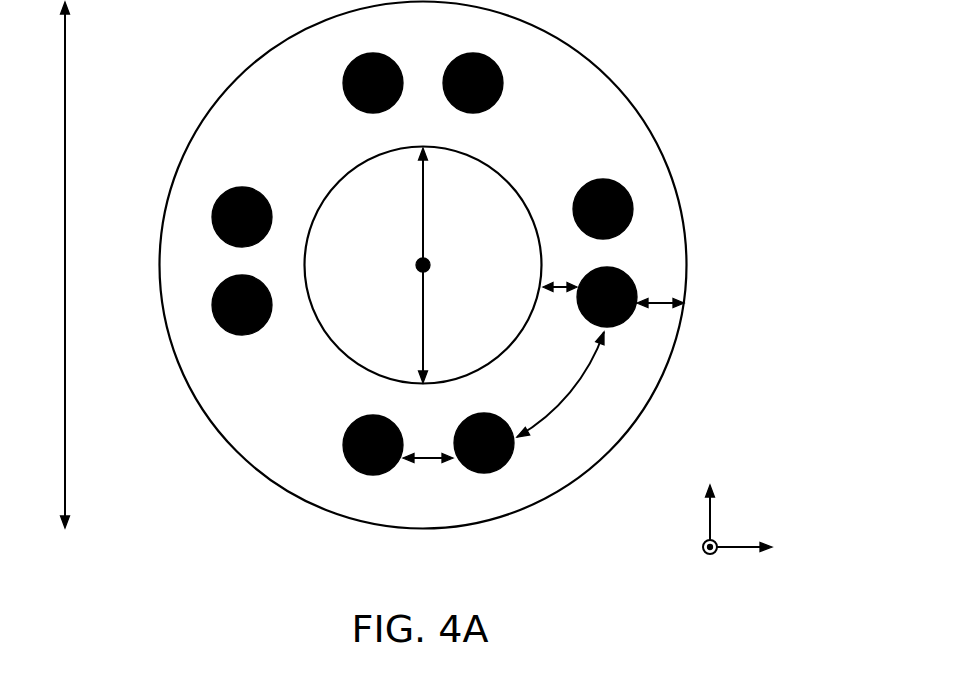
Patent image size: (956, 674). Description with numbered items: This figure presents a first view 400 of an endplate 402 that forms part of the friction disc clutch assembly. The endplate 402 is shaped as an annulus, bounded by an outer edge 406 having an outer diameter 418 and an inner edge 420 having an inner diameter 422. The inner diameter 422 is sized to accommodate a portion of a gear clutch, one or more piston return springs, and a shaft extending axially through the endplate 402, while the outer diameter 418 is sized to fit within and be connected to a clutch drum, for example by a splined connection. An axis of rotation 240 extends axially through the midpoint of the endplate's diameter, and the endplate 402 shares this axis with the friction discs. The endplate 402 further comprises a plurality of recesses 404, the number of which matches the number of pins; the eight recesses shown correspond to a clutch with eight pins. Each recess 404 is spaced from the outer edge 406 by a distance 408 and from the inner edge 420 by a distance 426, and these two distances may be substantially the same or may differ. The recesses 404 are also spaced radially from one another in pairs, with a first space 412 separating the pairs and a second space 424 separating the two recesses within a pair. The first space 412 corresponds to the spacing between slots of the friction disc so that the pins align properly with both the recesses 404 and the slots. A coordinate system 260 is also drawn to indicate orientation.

The first view 400 is at (417, 265).
The endplate 402 is at (462, 265).
The outer edge 406 is at (667, 160).
The inner edge 420 is at (487, 168).
The recesses 404 is at (476, 112).
The axis of rotation 240 is at (426, 260).
The inner diameter 422 is at (425, 235).
The outer diameter 418 is at (65, 118).
The distance from inner edge 426 is at (545, 290).
The distance from outer edge 408 is at (662, 300).
The first space 412 is at (573, 390).
The second space 424 is at (430, 462).
The coordinate system 260 is at (763, 512).